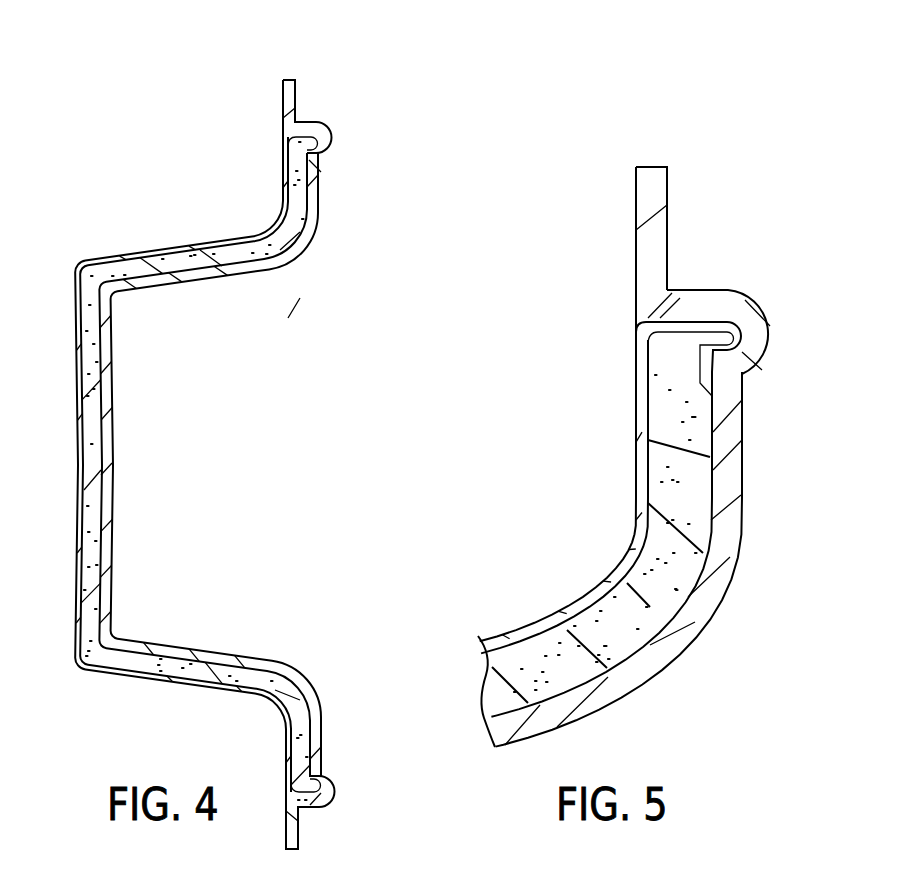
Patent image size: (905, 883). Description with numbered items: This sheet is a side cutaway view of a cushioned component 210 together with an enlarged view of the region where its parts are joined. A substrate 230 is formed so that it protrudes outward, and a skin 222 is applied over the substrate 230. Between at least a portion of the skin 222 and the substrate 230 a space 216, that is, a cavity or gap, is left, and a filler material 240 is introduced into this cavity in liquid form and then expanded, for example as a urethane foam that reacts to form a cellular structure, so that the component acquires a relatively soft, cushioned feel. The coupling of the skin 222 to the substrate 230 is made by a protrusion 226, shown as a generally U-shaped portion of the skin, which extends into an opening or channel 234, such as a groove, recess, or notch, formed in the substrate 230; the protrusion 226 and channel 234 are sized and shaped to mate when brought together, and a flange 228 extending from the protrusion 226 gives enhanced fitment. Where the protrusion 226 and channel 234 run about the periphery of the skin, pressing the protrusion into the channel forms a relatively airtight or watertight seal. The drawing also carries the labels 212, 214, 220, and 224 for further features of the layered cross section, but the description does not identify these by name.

In FIG. 4, the door gasket / seal assembly 210 is at (386, 94).
In FIG. 5, the door gasket / seal assembly 210 is at (748, 183).
In FIG. 4, the outer skin layer 212 is at (77, 548).
In FIG. 5, the outer skin layer 212 is at (636, 488).
In FIG. 4, the inner layer 214 is at (110, 490).
In FIG. 5, the inner layer 214 is at (720, 597).
In FIG. 4, the space 216 is at (298, 195).
In FIG. 4, the barrier film layer 220 is at (76, 407).
In FIG. 4, the skin 222 is at (245, 234).
In FIG. 5, the skin 222 is at (632, 421).
In FIG. 5, the wrapped end portion 224 is at (594, 322).
In FIG. 5, the protrusion 226 is at (734, 331).
In FIG. 5, the flange 228 is at (700, 357).
In FIG. 4, the substrate 230 is at (119, 374).
In FIG. 5, the substrate 230 is at (652, 178).
In FIG. 5, the channel 234 is at (745, 345).
In FIG. 4, the filler material 240 is at (96, 622).
In FIG. 5, the filler material 240 is at (668, 562).